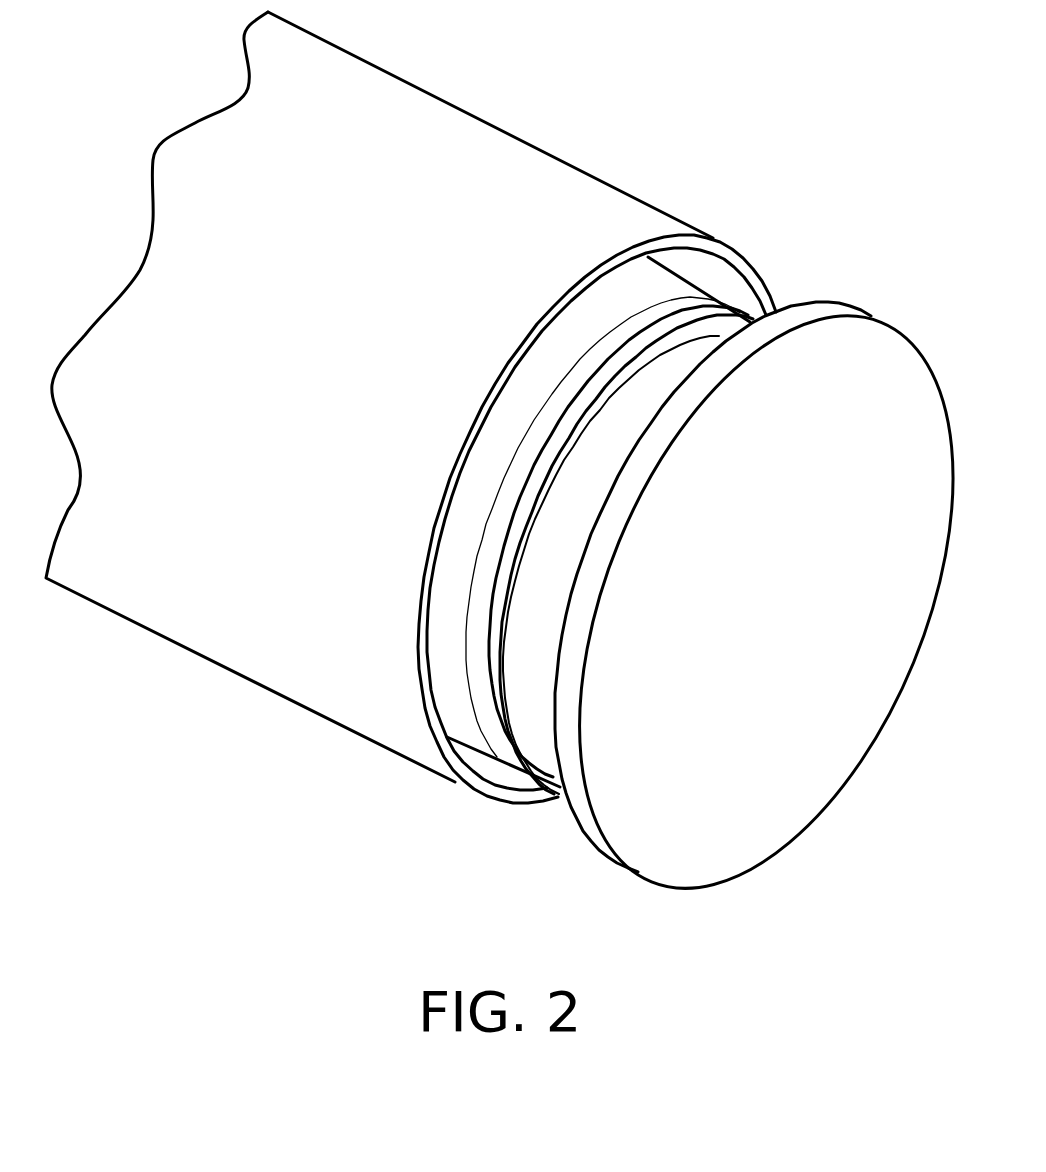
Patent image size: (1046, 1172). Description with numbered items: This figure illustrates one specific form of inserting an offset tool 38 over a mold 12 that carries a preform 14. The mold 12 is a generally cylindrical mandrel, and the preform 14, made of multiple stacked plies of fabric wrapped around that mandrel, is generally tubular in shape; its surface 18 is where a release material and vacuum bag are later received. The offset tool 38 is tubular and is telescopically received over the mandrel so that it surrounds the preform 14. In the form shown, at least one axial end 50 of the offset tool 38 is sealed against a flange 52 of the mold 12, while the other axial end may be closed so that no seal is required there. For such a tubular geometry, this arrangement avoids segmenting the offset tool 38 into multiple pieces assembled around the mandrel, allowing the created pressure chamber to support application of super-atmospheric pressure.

The offset tool 38 is at (458, 136).
The preform 14 is at (709, 580).
The surface 18 is at (661, 291).
The axial end 50 is at (456, 768).
The flange 52 is at (688, 406).
The mold 12 is at (544, 728).